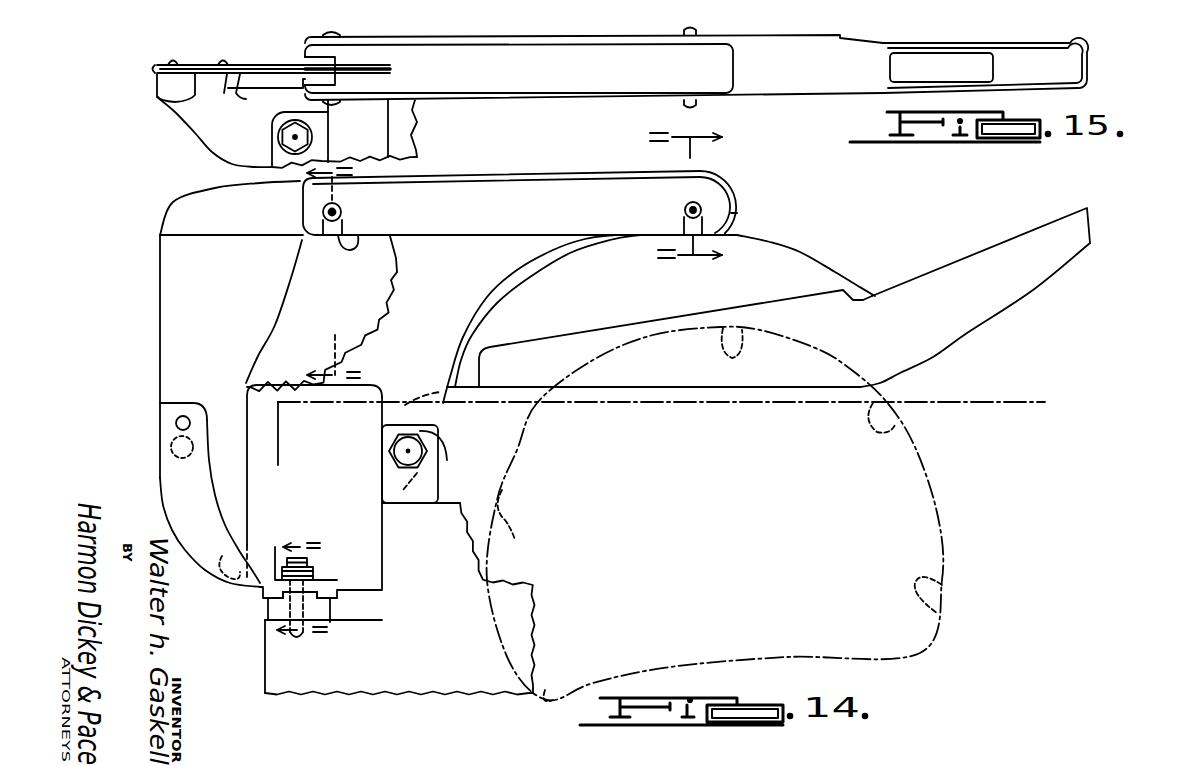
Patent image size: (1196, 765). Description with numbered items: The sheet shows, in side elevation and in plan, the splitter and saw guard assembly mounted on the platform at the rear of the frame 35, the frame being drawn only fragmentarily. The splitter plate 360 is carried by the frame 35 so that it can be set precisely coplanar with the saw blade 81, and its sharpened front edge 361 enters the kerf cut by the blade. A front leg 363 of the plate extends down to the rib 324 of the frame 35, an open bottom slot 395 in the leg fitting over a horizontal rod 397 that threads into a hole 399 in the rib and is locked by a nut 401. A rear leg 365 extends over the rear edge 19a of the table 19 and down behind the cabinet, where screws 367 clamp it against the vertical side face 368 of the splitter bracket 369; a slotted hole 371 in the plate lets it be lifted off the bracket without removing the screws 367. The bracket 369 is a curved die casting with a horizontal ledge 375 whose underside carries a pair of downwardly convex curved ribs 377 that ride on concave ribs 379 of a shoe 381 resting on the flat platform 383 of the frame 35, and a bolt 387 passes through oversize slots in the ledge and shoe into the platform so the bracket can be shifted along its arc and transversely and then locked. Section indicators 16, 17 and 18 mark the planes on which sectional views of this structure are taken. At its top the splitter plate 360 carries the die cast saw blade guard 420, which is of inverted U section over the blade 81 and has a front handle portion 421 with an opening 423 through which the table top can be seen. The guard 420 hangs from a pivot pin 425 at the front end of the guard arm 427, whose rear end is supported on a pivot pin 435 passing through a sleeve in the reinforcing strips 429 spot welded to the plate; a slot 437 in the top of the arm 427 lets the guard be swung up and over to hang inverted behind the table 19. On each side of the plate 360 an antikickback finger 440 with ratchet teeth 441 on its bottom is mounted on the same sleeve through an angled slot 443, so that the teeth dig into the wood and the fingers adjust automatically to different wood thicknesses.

In FIG. 14, the section line 16- 16 is at (302, 590).
In FIG. 15, the section line 17- 17 is at (686, 133).
In FIG. 14, the section line 17- 17 is at (690, 263).
In FIG. 14, the section line 18- 18 is at (311, 273).
In FIG. 14, the table 19 is at (973, 399).
In FIG. 14, the rear edge of the table 19a is at (276, 421).
In FIG. 15, the frame 35 is at (404, 153).
In FIG. 14, the frame 35 is at (532, 637).
In FIG. 14, the saw blade 81 is at (943, 477).
In FIG. 14, the rib 324 is at (430, 488).
In FIG. 15, the splitter plate 360 is at (281, 63).
In FIG. 14, the splitter plate 360 is at (160, 308).
In FIG. 14, the sharpened front edge 361 is at (450, 405).
In FIG. 14, the front leg 363 is at (388, 409).
In FIG. 14, the rear leg 365 is at (227, 468).
In FIG. 15, the screws 367 is at (223, 62).
In FIG. 14, the screws 367 is at (175, 423).
In FIG. 15, the vertical side face 368 is at (155, 69).
In FIG. 15, the splitter bracket 369 is at (200, 132).
In FIG. 14, the splitter bracket 369 is at (162, 478).
In FIG. 14, the slotted hole 371 is at (170, 444).
In FIG. 15, the horizontal ledge 375 is at (281, 116).
In FIG. 14, the horizontal ledge 375 is at (265, 595).
In FIG. 14, the curved ribs 377 is at (265, 602).
In FIG. 14, the concave ribs 379 is at (265, 620).
In FIG. 14, the shoe 381 is at (333, 615).
In FIG. 14, the flat platform 383 is at (333, 622).
In FIG. 15, the bolt 387 is at (313, 138).
In FIG. 14, the bolt 387 is at (315, 578).
In FIG. 14, the open bottom slot 395 is at (409, 503).
In FIG. 14, the horizontal rod 397 is at (439, 440).
In FIG. 14, the hole 399 is at (427, 487).
In FIG. 14, the nut 401 is at (395, 472).
In FIG. 15, the saw blade guard 420 is at (826, 78).
In FIG. 14, the saw blade guard 420 is at (818, 264).
In FIG. 15, the handle portion 421 is at (1067, 66).
In FIG. 14, the handle portion 421 is at (1075, 230).
In FIG. 15, the opening 423 is at (990, 64).
In FIG. 14, the pivot pin 425 is at (685, 210).
In FIG. 14, the guard arm 427 is at (597, 180).
In FIG. 15, the strips 429 is at (238, 95).
In FIG. 14, the strips 429 is at (170, 213).
In FIG. 15, the pivot pin 435 is at (342, 36).
In FIG. 15, the slot 437 is at (378, 66).
In FIG. 14, the antikickback fingers 440 is at (393, 271).
In FIG. 14, the ratchet teeth 441 is at (384, 327).
In FIG. 14, the slot 443 is at (337, 245).